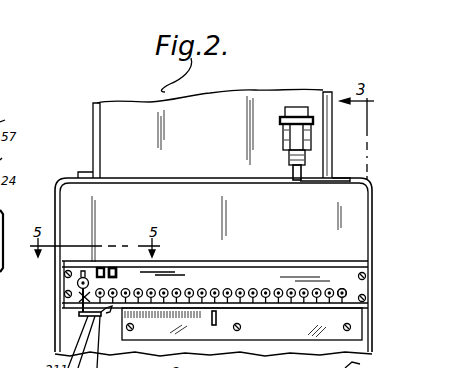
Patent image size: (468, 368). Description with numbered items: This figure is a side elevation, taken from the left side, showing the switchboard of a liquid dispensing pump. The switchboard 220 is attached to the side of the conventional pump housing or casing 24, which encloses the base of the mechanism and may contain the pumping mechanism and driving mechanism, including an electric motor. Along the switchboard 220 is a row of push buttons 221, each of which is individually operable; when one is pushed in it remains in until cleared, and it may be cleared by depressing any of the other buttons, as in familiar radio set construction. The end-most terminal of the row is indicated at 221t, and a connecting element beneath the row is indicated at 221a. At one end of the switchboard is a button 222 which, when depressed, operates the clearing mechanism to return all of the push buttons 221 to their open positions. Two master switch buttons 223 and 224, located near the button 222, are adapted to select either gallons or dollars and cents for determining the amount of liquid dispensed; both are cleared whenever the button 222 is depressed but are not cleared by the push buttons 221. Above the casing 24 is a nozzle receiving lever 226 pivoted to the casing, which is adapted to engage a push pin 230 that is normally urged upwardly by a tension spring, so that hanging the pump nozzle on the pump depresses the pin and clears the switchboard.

The pump housing or casing 24 is at (127, 85).
The switchboard 220 is at (255, 260).
The push buttons 221 is at (317, 287).
The terminal connector plate 221a is at (78, 312).
The end terminal 221t is at (344, 288).
The button 222 is at (77, 285).
The master switch button 223 is at (101, 267).
The master switch button 224 is at (115, 267).
The nozzle receiving lever 226 is at (284, 136).
The push pin 230 is at (293, 171).